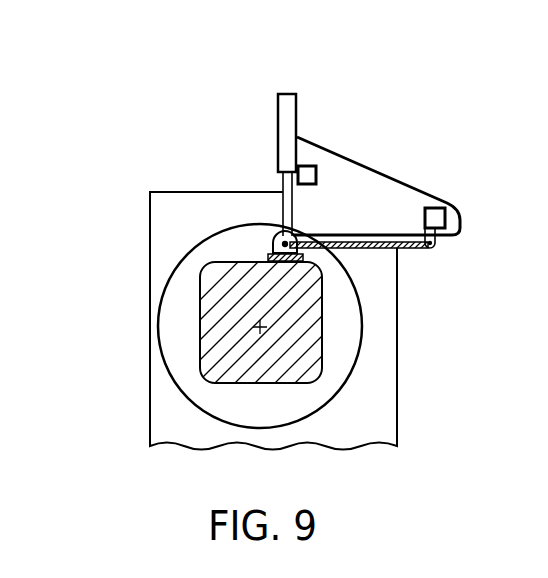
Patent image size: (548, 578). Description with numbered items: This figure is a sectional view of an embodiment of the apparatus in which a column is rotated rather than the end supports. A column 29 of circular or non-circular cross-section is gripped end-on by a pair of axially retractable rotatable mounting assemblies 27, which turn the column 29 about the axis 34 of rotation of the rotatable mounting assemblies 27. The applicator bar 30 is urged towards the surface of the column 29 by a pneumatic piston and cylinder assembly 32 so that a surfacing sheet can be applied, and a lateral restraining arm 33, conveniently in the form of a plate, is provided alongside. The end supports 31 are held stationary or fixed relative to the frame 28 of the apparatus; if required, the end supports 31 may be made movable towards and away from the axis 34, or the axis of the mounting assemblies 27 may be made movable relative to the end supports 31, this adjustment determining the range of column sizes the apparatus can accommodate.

The rotatable mounting assembly 27 is at (173, 299).
The frame 28 is at (177, 203).
The column 29 is at (322, 343).
The applicator bar 30 is at (270, 253).
The end support 31 is at (337, 177).
The pneumatic piston and cylinder assembly 32 is at (288, 117).
The lateral restraining arm 33 is at (387, 238).
The axis of rotation 34 is at (255, 325).